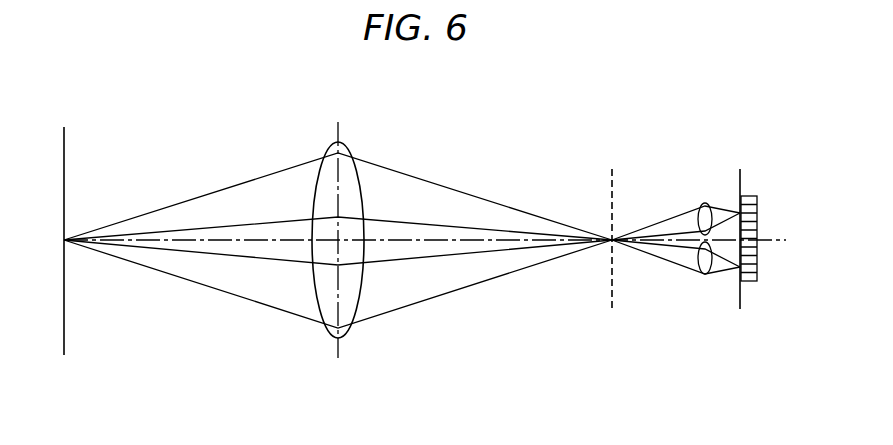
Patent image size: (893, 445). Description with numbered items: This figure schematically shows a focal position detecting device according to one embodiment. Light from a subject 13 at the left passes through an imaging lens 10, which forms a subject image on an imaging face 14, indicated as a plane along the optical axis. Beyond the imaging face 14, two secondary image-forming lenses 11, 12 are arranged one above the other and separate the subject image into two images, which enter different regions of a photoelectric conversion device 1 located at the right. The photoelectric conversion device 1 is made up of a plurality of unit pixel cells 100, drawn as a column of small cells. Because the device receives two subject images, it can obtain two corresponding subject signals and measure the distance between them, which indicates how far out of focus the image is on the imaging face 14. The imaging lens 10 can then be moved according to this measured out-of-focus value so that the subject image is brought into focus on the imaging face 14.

The photoelectric conversion device 1 is at (766, 238).
The imaging lens 10 is at (357, 172).
The secondary image-forming lens 11 is at (705, 203).
The secondary image-forming lens 12 is at (705, 275).
The subject 13 is at (66, 143).
The imaging face 14 is at (610, 181).
The unit pixel cell 100 is at (749, 283).